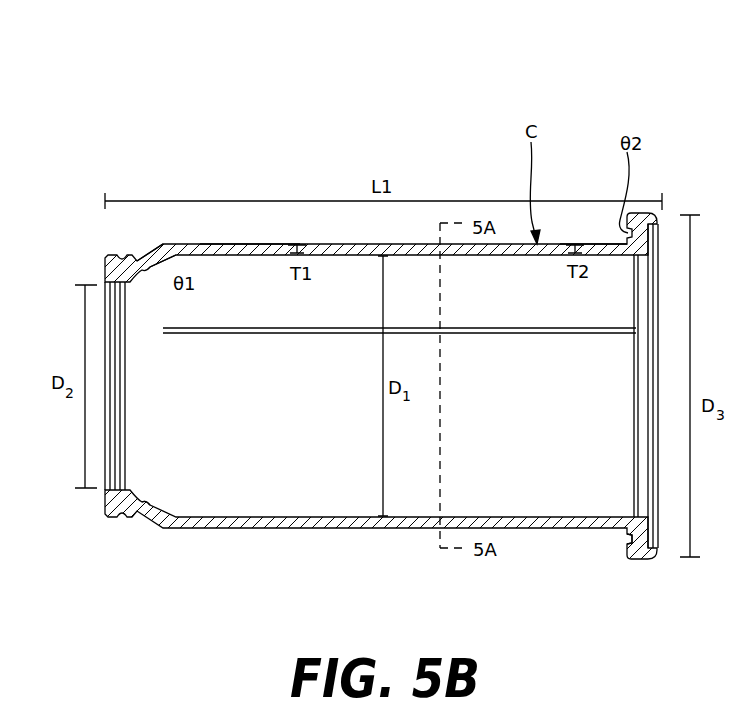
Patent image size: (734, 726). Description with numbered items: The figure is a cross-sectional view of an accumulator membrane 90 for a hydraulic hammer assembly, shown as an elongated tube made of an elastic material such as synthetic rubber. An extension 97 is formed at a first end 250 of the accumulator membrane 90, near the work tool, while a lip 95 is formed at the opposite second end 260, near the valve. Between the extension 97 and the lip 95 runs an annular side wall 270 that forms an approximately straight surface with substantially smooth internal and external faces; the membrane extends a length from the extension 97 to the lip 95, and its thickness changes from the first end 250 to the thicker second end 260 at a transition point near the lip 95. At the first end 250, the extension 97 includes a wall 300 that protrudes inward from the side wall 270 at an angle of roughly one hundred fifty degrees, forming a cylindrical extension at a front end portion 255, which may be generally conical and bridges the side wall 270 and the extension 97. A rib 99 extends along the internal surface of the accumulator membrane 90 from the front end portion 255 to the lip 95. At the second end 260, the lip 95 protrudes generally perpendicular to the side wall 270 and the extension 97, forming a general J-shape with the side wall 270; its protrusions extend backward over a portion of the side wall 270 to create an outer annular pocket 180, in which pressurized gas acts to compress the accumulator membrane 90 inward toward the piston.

The accumulator membrane 90 is at (268, 528).
The lip 95 is at (657, 218).
The extension 97 is at (113, 257).
The rib 99 is at (630, 328).
The outer annular pocket 180 is at (630, 534).
The first end 250 is at (158, 267).
The front end portion 255 is at (156, 246).
The second end 260 is at (589, 243).
The annular side wall 270 is at (248, 244).
The wall 300 is at (143, 511).